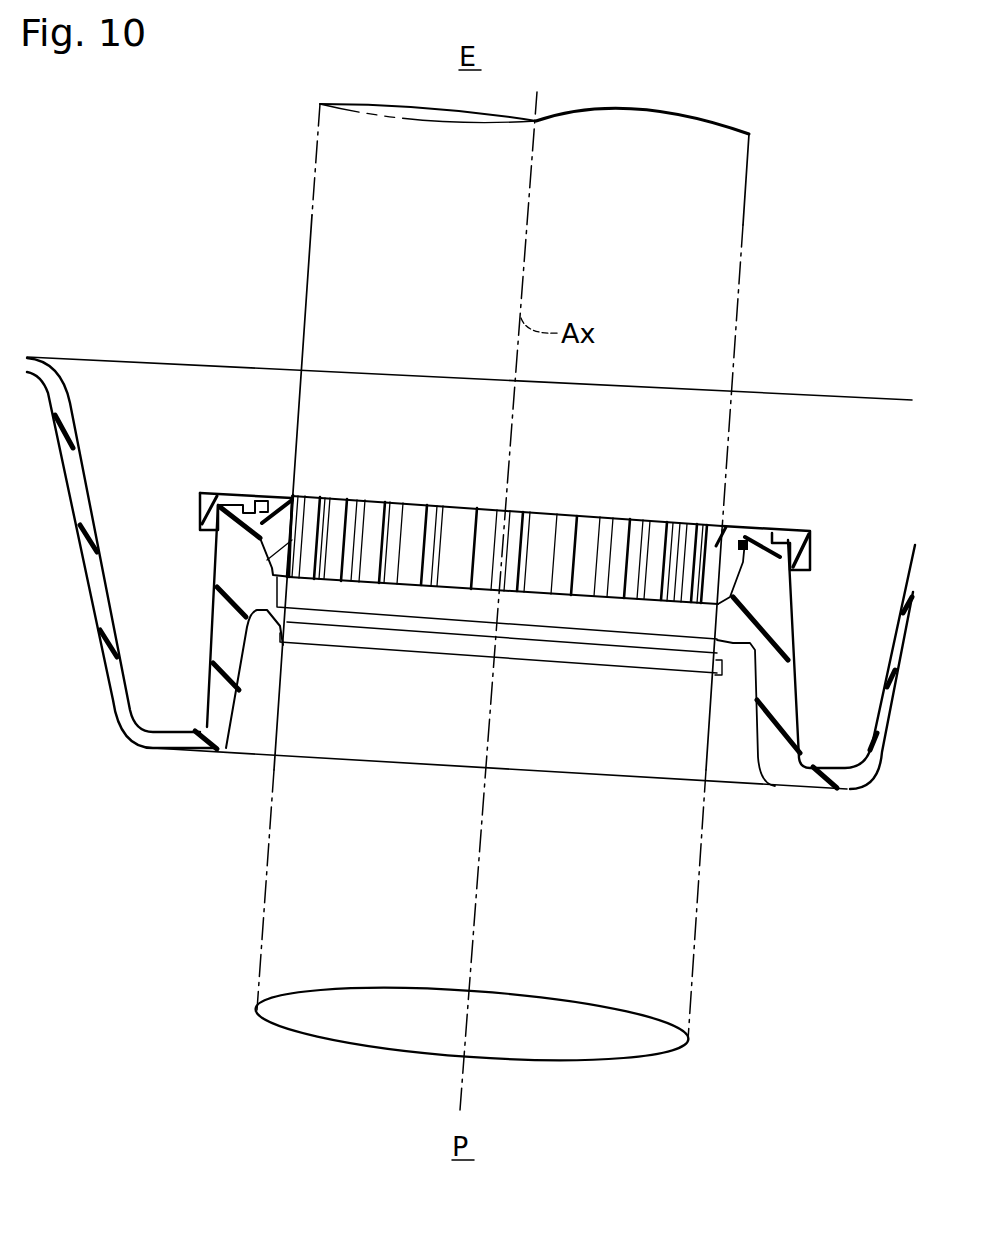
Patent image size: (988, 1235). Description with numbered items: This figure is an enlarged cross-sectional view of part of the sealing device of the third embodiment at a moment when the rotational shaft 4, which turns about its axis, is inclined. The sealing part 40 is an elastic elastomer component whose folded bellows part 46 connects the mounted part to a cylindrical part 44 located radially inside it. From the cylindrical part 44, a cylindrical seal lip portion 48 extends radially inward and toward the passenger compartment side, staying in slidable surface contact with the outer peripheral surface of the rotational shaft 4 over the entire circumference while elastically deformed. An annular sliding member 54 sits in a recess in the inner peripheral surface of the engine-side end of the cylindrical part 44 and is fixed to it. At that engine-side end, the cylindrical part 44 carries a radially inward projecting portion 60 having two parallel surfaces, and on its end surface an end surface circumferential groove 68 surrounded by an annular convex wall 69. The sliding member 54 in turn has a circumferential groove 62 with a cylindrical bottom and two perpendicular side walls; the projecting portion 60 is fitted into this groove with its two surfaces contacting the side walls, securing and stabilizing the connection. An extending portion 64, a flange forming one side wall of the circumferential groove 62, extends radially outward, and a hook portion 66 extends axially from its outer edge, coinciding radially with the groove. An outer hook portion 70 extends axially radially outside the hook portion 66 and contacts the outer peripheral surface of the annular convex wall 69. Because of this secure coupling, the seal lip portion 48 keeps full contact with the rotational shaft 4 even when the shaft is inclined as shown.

The rotational shaft 4 is at (307, 280).
The sealing part 40 is at (152, 756).
The cylindrical part 44 is at (775, 601).
The bellows part 46 is at (83, 485).
The seal lip portion 48 is at (285, 632).
The sliding member 54 is at (793, 597).
The projecting portion 60 is at (745, 535).
The circumferential groove 62 is at (778, 595).
The extending portion 64 is at (275, 496).
The hook portion 66 is at (217, 535).
The end surface circumferential groove 68 is at (246, 497).
The annular convex wall 69 is at (229, 497).
The outer hook portion 70 is at (200, 520).